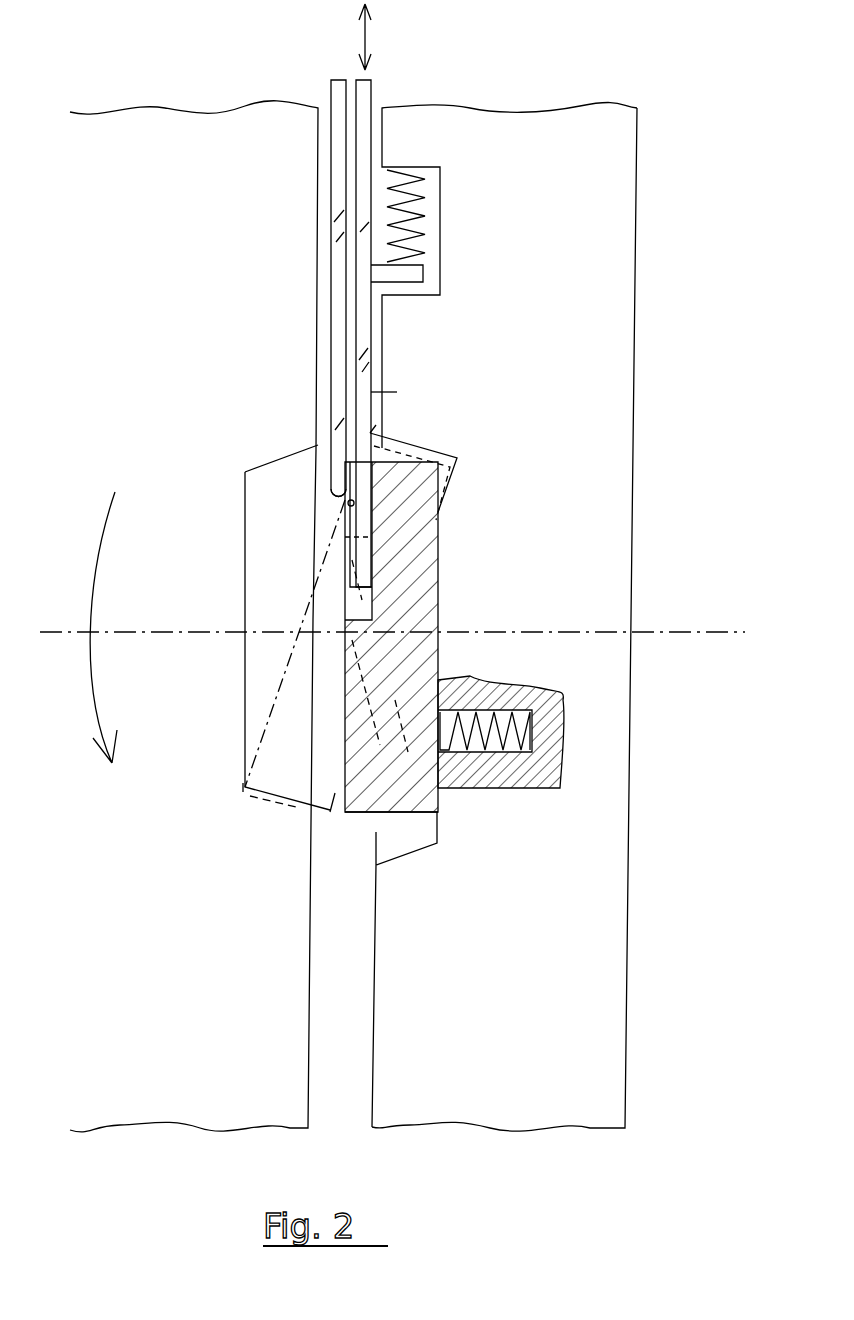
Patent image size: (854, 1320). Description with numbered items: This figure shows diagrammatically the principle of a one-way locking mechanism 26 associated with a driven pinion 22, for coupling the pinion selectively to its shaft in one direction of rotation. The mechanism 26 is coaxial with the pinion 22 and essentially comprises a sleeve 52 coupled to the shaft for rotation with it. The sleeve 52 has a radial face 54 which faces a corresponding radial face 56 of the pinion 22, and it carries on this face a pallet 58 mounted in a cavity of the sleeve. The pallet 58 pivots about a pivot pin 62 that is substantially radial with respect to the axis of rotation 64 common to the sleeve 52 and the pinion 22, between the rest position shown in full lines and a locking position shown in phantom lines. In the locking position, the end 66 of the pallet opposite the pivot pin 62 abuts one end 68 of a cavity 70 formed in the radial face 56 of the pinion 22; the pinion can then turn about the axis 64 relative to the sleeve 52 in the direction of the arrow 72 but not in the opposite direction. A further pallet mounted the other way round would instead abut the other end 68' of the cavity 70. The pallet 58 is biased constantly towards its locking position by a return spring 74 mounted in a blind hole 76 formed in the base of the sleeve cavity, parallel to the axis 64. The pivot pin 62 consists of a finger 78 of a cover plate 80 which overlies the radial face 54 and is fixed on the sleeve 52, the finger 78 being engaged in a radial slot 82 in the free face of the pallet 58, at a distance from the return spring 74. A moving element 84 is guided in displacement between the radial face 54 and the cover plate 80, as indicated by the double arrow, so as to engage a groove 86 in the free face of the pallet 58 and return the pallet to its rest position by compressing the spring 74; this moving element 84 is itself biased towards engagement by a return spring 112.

The driven pinion 22 is at (191, 92).
The one-way locking mechanism 26 is at (501, 97).
The sleeve 52 is at (637, 290).
The radial face of the sleeve 54 is at (372, 970).
The radial face of the pinion 56 is at (308, 1048).
The pallet 58 is at (440, 601).
The pivot pin 62 is at (345, 505).
The axis of rotation 64 is at (676, 628).
The end of the pallet 66 is at (365, 813).
The end of the cavity 68 is at (277, 678).
The other end of the cavity 68' is at (281, 422).
The cavity 70 is at (245, 733).
The arrow 72 is at (93, 573).
The return spring 74 is at (497, 757).
The blind hole 76 is at (503, 710).
The finger 78 is at (340, 507).
The cover plate 80 is at (332, 214).
The radial slot 82 is at (345, 537).
The moving element 84 is at (397, 392).
The groove 86 is at (414, 540).
The spring 112 is at (410, 214).